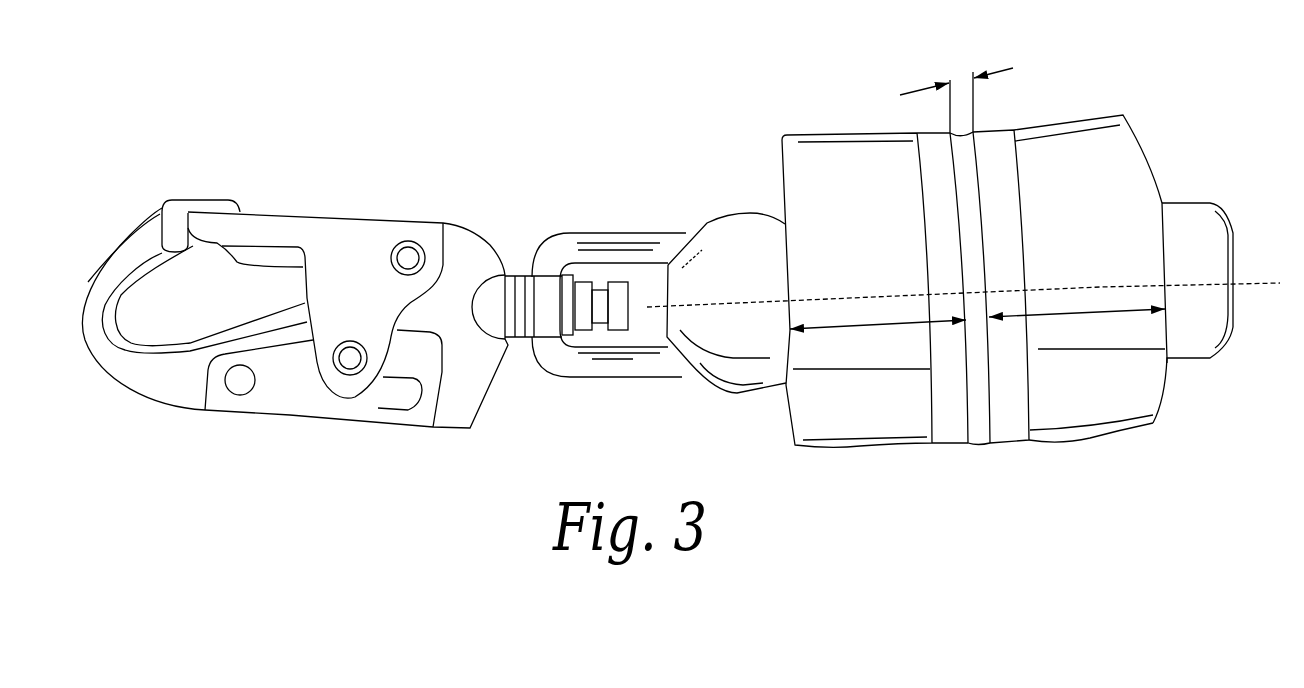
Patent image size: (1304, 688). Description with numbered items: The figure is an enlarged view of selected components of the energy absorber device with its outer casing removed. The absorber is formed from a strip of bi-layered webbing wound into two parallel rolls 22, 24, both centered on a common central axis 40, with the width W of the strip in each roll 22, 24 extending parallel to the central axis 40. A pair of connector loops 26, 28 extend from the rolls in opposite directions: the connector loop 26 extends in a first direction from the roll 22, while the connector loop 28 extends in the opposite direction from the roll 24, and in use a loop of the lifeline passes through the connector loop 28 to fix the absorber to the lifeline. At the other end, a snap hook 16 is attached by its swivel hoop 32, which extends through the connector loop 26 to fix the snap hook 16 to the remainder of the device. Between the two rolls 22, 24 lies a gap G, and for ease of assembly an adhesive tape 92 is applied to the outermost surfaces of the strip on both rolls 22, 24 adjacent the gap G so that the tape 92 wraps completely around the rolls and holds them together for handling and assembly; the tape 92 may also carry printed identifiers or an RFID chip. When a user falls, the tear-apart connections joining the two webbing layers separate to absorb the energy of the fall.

The snap hook 16 is at (347, 219).
The swivel hoop 32 is at (605, 233).
The connector loop 26 is at (745, 223).
The roll 22 is at (855, 157).
The adhesive tape 92 is at (1010, 440).
The roll 24 is at (1078, 127).
The connector loop 28 is at (1180, 213).
The central axis 40 is at (1258, 283).
The gap G is at (958, 83).
The width W is at (858, 327).